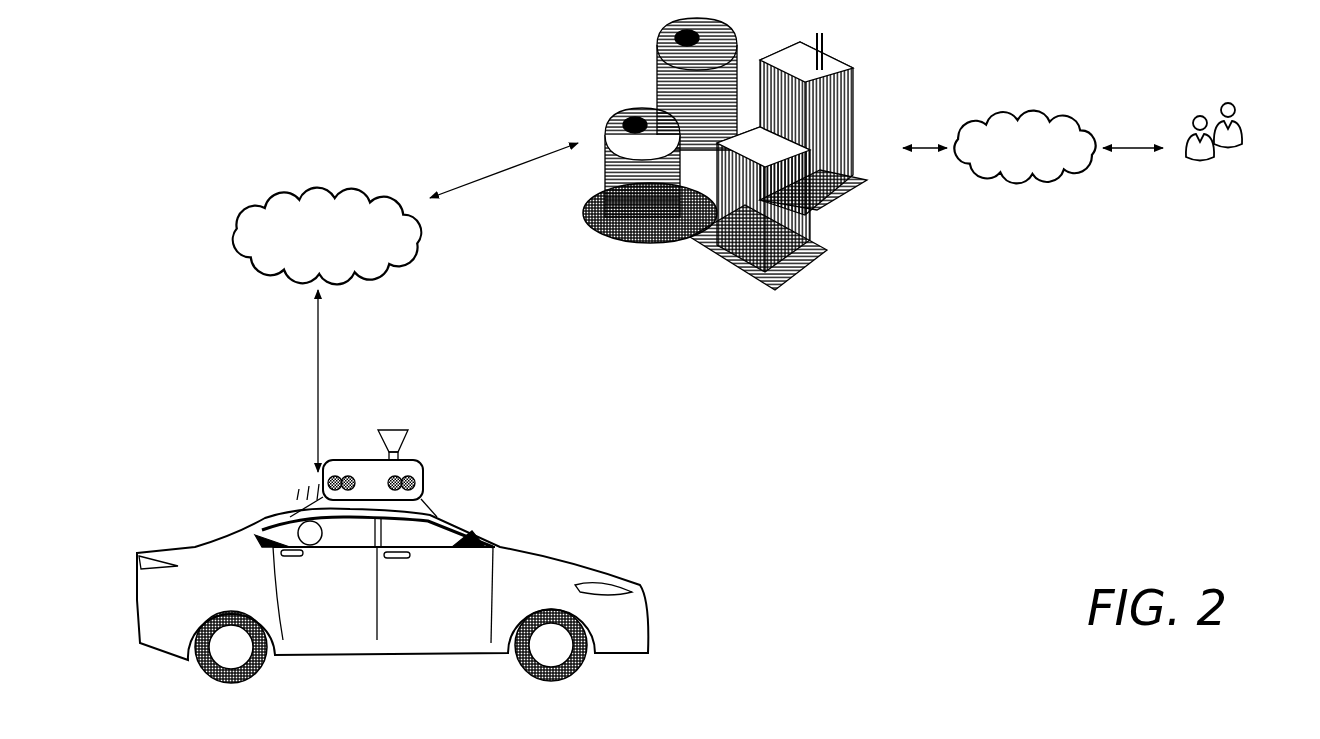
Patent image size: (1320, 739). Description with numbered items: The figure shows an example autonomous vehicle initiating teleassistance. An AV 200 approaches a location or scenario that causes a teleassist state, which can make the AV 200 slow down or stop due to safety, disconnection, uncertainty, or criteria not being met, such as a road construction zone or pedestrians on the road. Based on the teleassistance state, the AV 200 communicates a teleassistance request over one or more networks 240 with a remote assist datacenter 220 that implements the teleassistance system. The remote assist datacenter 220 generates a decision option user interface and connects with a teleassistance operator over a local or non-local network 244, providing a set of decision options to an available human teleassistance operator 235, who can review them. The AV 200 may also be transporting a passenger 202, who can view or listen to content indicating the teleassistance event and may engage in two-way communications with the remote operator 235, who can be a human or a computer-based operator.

The autonomous vehicle (AV) 200 is at (392, 580).
The passenger 202 is at (312, 552).
The remote assist datacenter 220 is at (725, 194).
The teleassistance operator 235 is at (1217, 178).
The networks 240 is at (327, 236).
The local or non-local network 244 is at (1025, 147).